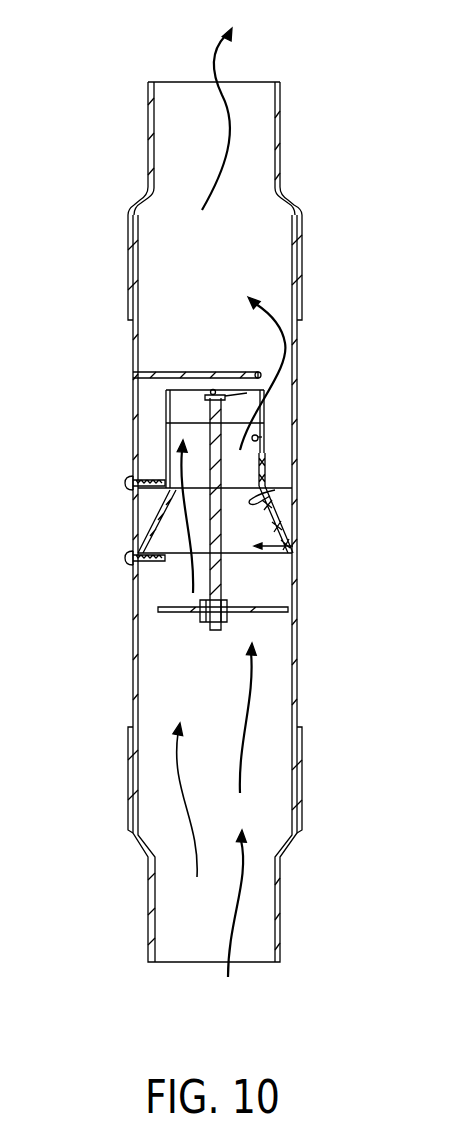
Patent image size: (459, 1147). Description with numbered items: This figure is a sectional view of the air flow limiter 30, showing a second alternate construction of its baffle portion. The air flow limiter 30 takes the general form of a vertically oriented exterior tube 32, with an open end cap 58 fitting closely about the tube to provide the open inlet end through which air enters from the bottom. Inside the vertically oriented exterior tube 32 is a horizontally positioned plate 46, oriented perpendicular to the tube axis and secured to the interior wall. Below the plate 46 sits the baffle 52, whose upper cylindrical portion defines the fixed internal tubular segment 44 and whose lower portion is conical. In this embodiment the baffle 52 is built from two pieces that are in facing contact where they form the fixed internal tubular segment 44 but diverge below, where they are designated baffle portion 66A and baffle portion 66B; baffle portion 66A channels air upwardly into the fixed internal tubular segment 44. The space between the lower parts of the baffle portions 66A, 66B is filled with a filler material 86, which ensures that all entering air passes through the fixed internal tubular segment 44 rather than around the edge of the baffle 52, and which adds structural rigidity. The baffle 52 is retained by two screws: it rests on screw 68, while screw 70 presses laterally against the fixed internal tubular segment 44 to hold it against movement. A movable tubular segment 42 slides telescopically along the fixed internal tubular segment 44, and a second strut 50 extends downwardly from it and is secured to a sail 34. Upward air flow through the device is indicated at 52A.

The air flow limiter 30 is at (312, 149).
The vertically oriented exterior tube 32 is at (298, 677).
The end cap 58 is at (278, 903).
The horizontally positioned plate 46 is at (157, 374).
The movable tubular segment 42 is at (264, 400).
The fixed internal tubular segment 44 is at (258, 438).
The baffle 52 is at (293, 551).
The air flow path 52A is at (293, 546).
The second strut 50 is at (222, 582).
The sail 34 is at (262, 612).
The baffle portion 66A is at (267, 487).
The baffle portion 66B is at (270, 527).
The filler material 86 is at (283, 498).
The screw 70 is at (125, 483).
The screw 68 is at (125, 558).